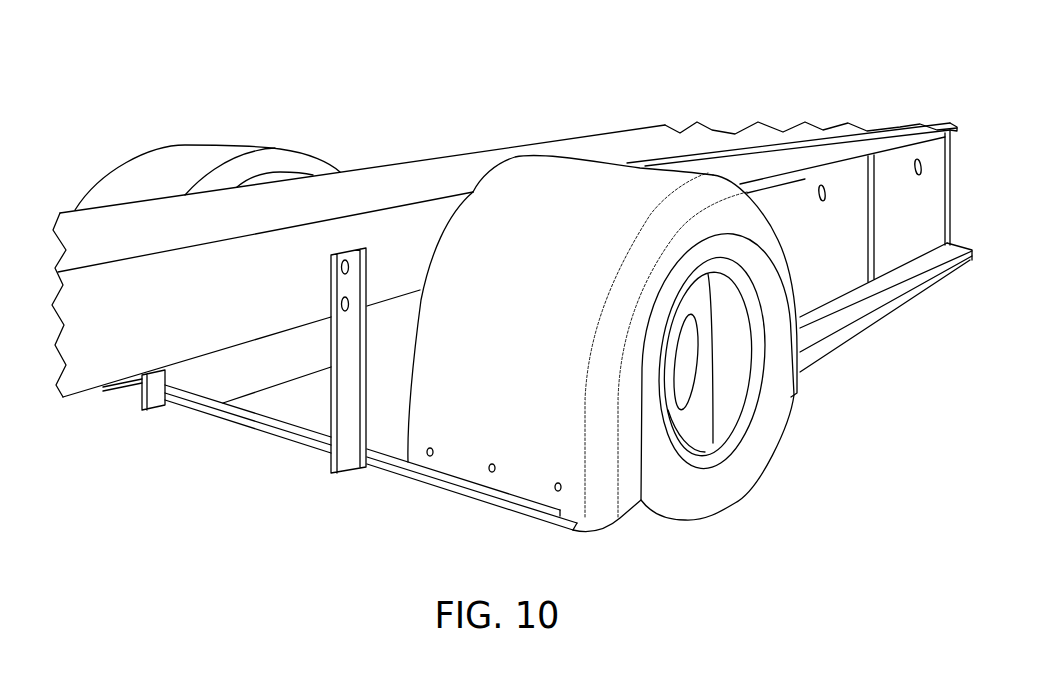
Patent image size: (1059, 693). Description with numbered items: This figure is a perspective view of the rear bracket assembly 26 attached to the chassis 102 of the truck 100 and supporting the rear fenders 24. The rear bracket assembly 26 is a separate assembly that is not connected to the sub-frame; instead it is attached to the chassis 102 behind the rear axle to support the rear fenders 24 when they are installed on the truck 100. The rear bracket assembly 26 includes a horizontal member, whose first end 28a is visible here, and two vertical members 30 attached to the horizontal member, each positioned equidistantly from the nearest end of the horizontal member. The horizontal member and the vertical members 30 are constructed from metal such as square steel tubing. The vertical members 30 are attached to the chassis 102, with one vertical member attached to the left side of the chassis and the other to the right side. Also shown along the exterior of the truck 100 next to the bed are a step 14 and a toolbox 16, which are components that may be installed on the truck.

The step 14 is at (799, 225).
The toolbox 16 is at (893, 136).
The rear fender 24 is at (146, 166).
The rear bracket assembly 26 is at (240, 484).
The first end 28a is at (553, 522).
The vertical member 30 is at (345, 475).
The truck 100 is at (795, 425).
The chassis 102 is at (400, 176).